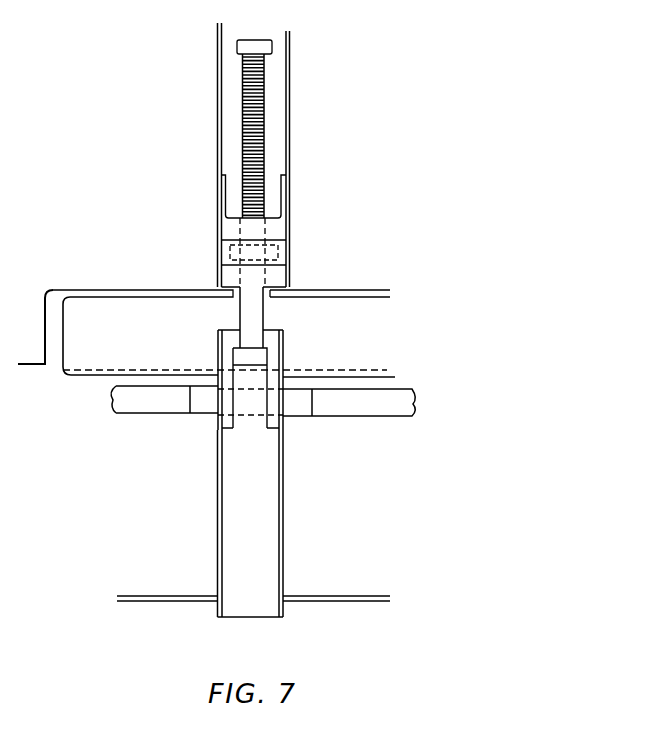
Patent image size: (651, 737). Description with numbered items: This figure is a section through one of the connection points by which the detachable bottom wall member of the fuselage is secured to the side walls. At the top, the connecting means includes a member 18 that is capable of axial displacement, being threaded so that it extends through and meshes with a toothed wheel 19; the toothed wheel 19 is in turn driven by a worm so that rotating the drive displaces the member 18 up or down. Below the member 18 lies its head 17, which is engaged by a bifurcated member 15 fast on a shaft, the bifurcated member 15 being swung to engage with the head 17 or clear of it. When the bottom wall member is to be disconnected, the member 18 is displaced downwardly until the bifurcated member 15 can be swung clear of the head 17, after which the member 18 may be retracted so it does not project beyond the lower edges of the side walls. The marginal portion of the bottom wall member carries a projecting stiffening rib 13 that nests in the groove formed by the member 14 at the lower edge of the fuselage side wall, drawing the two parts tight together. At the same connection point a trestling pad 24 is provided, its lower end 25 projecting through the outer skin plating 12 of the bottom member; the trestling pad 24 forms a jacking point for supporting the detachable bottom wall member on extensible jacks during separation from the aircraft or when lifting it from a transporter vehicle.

The outer skin plating 12 is at (190, 596).
The projecting stiffening rib 13 is at (124, 312).
The groove member 14 is at (56, 323).
The bifurcated member 15 is at (272, 362).
The head 17 is at (240, 366).
The axially displaceable member 18 is at (258, 283).
The toothed wheel 19 is at (278, 255).
The trestling pad 24 is at (265, 477).
The lower end of trestling pad 25 is at (265, 618).